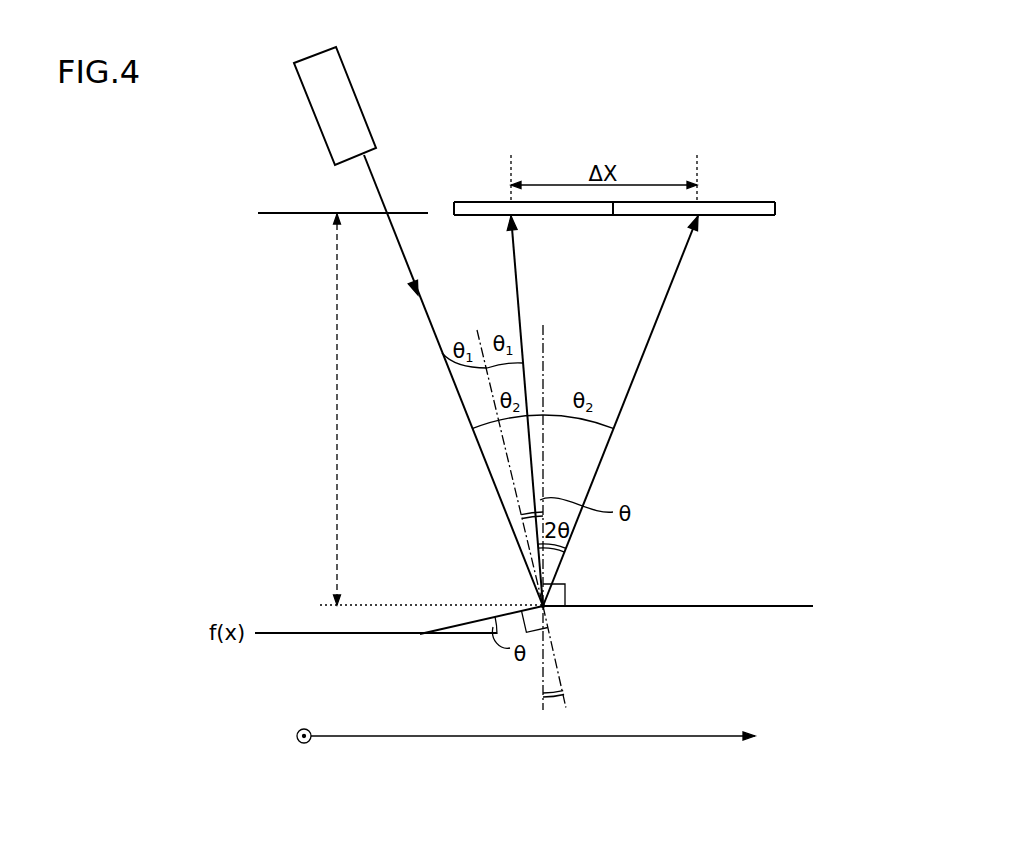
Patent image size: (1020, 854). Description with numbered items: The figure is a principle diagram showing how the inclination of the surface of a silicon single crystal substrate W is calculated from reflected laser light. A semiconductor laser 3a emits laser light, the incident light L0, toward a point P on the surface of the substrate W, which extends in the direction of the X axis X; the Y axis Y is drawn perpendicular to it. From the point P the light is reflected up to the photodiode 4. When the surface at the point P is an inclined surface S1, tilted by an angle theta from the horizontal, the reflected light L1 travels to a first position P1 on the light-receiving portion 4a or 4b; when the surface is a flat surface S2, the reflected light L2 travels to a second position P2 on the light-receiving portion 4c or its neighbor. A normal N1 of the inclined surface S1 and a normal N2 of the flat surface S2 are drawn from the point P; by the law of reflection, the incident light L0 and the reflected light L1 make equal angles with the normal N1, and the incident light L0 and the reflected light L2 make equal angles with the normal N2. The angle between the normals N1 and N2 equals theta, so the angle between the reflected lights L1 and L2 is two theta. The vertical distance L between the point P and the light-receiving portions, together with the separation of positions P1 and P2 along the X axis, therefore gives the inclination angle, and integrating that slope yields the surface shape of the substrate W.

The semiconductor laser 3a is at (318, 53).
The photodiode 4 is at (748, 202).
The light-receiving portion 4a is at (562, 216).
The light-receiving portion 4b is at (656, 208).
The light-receiving portion 4c is at (745, 216).
The incident light L0 is at (440, 348).
The reflected light L1 is at (516, 268).
The reflected light L2 is at (648, 355).
The distance L is at (343, 409).
The normal of the inclined surface N1 is at (502, 457).
The normal of the flat surface N2 is at (542, 505).
The point P is at (542, 605).
The first position P1 is at (512, 217).
The second position P2 is at (697, 217).
The inclined surface S1 is at (463, 625).
The flat surface S2 is at (390, 605).
The substrate W is at (765, 605).
The X axis X is at (533, 753).
The Y axis Y is at (304, 752).